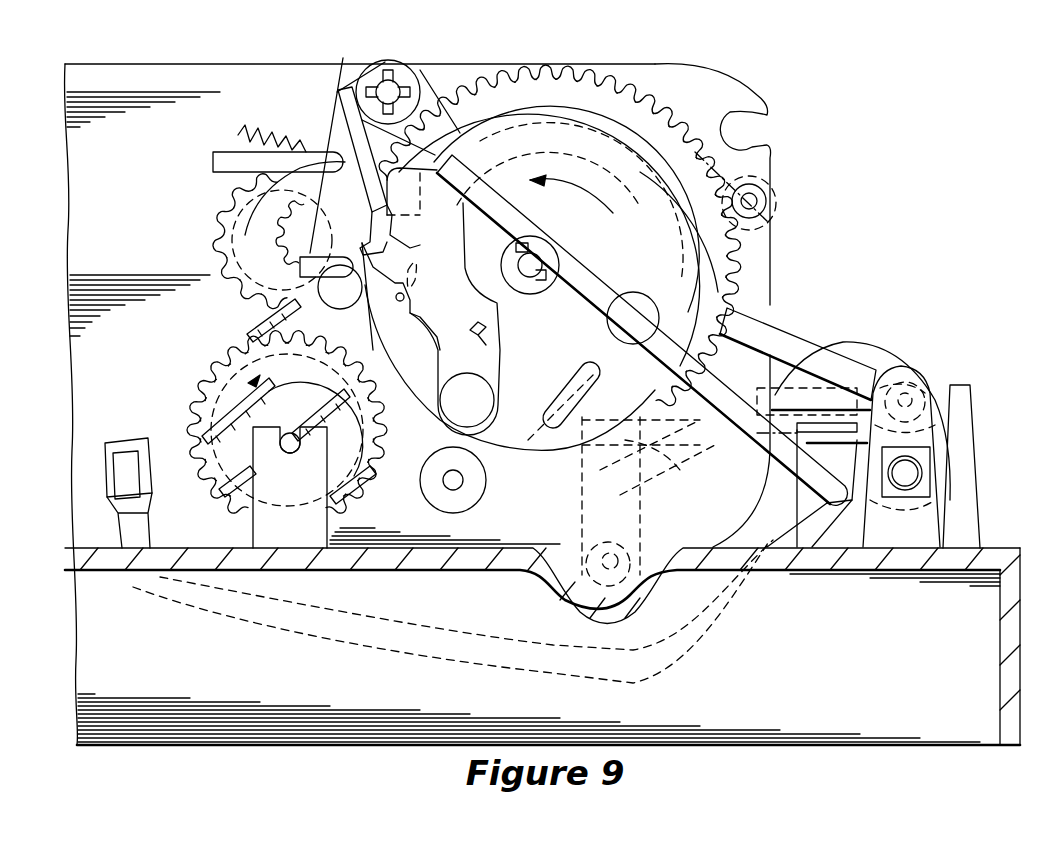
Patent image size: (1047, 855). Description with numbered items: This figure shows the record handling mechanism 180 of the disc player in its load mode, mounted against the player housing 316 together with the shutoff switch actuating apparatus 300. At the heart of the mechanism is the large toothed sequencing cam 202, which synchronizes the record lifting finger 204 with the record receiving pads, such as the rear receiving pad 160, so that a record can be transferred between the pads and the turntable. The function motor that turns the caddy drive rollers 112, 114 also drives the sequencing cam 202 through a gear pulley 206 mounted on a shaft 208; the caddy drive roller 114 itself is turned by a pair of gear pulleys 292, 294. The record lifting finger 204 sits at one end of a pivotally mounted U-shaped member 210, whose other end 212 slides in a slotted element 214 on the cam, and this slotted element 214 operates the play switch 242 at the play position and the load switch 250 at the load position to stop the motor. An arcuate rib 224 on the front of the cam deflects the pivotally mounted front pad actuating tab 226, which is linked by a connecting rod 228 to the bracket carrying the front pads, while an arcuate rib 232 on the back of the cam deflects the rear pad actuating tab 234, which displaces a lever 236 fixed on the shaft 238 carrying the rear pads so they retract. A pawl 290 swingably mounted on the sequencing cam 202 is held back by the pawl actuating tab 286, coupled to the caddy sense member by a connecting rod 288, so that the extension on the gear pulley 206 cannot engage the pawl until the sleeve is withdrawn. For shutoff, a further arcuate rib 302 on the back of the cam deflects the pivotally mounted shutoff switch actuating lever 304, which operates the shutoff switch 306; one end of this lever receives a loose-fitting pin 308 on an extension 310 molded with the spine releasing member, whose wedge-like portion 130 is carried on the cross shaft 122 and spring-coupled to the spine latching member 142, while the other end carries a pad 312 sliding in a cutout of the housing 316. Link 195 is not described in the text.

The caddy drive roller 112 is at (240, 342).
The caddy drive roller 114 is at (228, 380).
The cross shaft 122 is at (913, 477).
The wedge-like portion 130 is at (851, 346).
The spine latching member 142 is at (897, 366).
The record receiving pad 160 is at (586, 508).
The record handling mechanism 180 is at (870, 622).
The link 195 is at (803, 540).
The sequencing cam 202 is at (642, 165).
The record lifting finger 204 is at (123, 441).
The gear pulley 206 is at (222, 284).
The shaft 208 is at (235, 187).
The U-shaped member 210 is at (362, 638).
The other end of U-shaped member 212 is at (591, 292).
The slotted element 214 is at (733, 310).
The arcuate rib 224 is at (705, 263).
The front pad actuating tab 226 is at (345, 64).
The connecting rod 228 is at (254, 318).
The arcuate rib 232 is at (566, 135).
The rear pad actuating tab 234 is at (527, 453).
The lever 236 is at (703, 480).
The shaft 238 is at (557, 598).
The play switch 242 is at (390, 323).
The load switch 250 is at (712, 418).
The pawl actuating tab 286 is at (337, 130).
The connecting rod 288 is at (213, 162).
The pawl 290 is at (463, 430).
The gear pulley 292 is at (218, 250).
The gear pulley 294 is at (218, 513).
The shutoff switch actuating apparatus 300 is at (797, 135).
The arcuate rib 302 is at (484, 301).
The shutoff switch actuating lever 304 is at (810, 358).
The shutoff switch 306 is at (765, 232).
The loose-fitting pin 308 is at (910, 408).
The extension 310 is at (955, 388).
The pad 312 is at (606, 322).
The player housing 316 is at (135, 78).